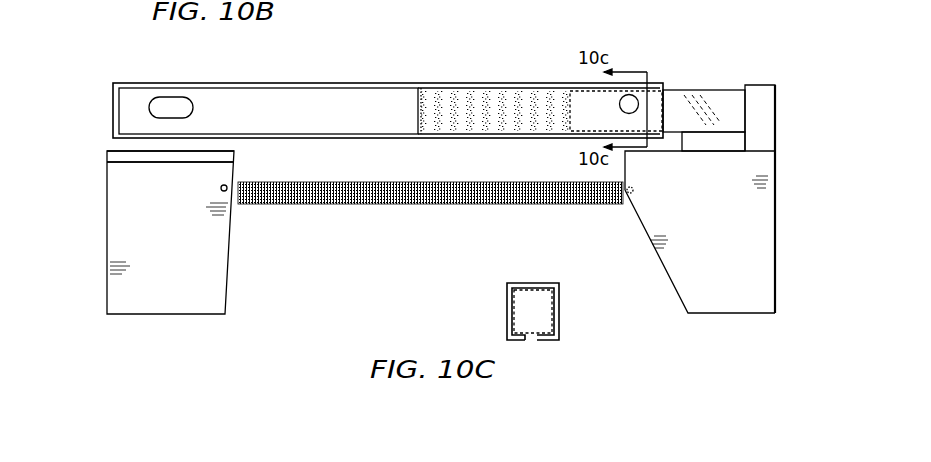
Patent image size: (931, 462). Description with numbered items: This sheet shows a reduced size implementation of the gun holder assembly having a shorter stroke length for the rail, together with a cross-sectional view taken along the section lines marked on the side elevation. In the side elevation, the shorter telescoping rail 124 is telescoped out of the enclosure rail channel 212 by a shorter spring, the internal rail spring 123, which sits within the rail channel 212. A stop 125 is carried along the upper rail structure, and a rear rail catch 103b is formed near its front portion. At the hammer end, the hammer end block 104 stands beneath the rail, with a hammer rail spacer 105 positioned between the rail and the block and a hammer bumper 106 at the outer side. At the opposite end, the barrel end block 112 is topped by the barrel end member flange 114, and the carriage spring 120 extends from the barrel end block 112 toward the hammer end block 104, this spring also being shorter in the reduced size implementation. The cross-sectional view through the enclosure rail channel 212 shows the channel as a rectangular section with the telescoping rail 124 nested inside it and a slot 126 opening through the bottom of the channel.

In FIG. 10B, the rear rail catch 103b is at (171, 97).
In FIG. 10B, the stop 125 is at (290, 100).
In FIG. 10B, the enclosure rail channel 212 is at (472, 84).
In FIG. 10C, the enclosure rail channel 212 is at (546, 283).
In FIG. 10B, the internal rail spring 123 is at (488, 86).
In FIG. 10B, the telescoping rail 124 is at (725, 97).
In FIG. 10C, the telescoping rail 124 is at (510, 312).
In FIG. 10B, the hammer bumper 106 is at (765, 100).
In FIG. 10B, the hammer rail spacer 105 is at (735, 140).
In FIG. 10B, the hammer end block 104 is at (765, 232).
In FIG. 10B, the barrel end block 112 is at (115, 200).
In FIG. 10B, the barrel end member flange 114 is at (240, 155).
In FIG. 10B, the carriage spring 120 is at (325, 198).
In FIG. 10C, the slot 126 is at (531, 348).